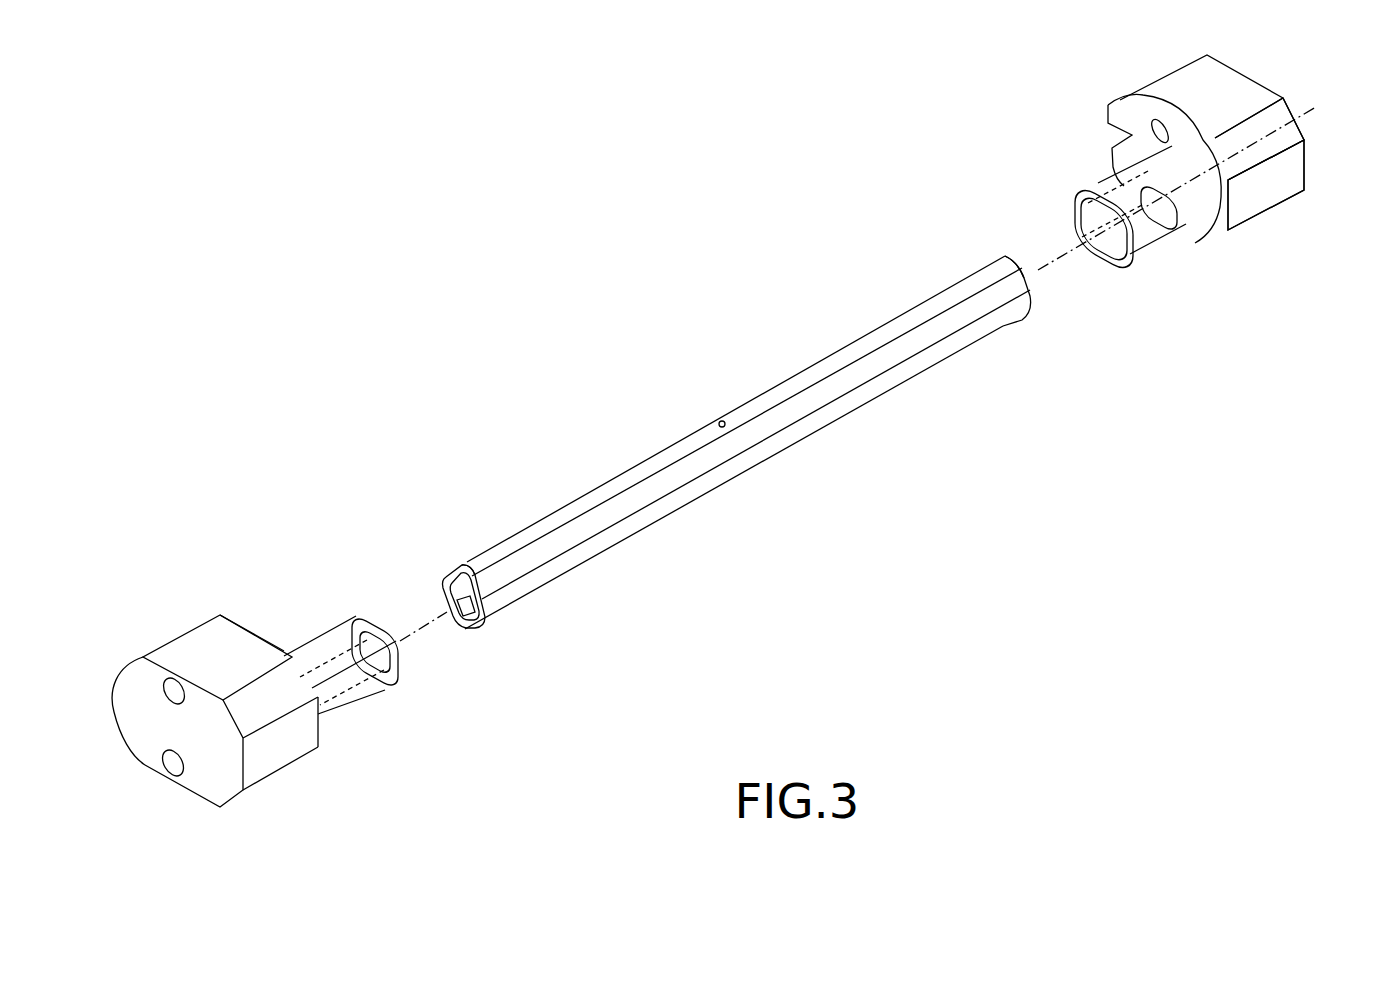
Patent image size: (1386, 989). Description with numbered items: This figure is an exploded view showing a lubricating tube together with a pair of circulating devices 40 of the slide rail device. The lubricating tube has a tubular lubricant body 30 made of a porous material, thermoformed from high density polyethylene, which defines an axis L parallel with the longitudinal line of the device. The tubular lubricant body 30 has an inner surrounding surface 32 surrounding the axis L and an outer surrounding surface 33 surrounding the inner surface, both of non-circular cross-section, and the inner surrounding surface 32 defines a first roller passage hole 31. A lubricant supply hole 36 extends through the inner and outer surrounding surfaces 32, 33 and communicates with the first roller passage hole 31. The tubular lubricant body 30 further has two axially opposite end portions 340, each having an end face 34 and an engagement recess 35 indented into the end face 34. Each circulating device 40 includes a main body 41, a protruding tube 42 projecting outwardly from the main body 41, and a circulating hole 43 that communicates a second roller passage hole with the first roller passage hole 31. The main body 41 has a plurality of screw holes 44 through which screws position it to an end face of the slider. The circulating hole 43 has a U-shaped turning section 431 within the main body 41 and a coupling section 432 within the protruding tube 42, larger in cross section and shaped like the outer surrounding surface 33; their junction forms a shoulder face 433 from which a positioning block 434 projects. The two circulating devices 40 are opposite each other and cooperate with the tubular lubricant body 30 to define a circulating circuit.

The tubular lubricant body 30 is at (610, 480).
The first roller passage hole 31 is at (474, 628).
The inner surrounding surface 32 is at (451, 624).
The outer surrounding surface 33 is at (669, 494).
The end face 34 is at (447, 566).
The engagement recess 35 is at (468, 560).
The lubricant supply hole 36 is at (723, 420).
The end portion 340 is at (506, 599).
The circulating device 40 is at (179, 637).
The main body 41 is at (1290, 196).
The protruding tube 42 is at (1148, 262).
The circulating hole 43 is at (1226, 146).
The screw hole 44 is at (1159, 117).
The turning section 431 is at (1299, 126).
The coupling section 432 is at (1100, 254).
The shoulder face 433 is at (1172, 236).
The positioning block 434 is at (1117, 148).
The axis L is at (406, 628).